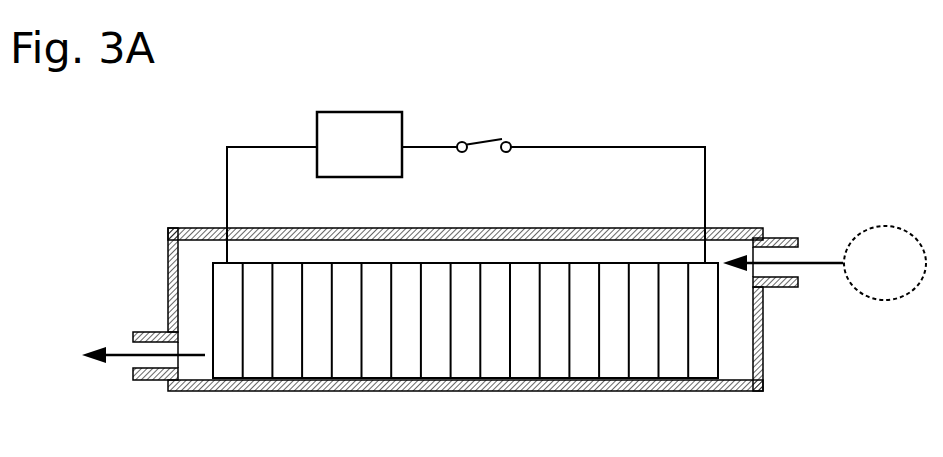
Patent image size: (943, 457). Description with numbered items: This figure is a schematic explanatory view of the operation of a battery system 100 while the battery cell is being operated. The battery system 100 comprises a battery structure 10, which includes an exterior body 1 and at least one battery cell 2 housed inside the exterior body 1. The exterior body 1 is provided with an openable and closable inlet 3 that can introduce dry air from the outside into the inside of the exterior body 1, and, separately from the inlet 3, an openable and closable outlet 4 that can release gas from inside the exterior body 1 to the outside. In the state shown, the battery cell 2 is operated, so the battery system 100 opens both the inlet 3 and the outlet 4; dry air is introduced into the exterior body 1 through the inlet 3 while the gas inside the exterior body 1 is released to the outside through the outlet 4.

The battery system 100 is at (481, 84).
The battery structure 10 is at (168, 187).
The exterior body 1 is at (675, 228).
The battery cell 2 is at (674, 367).
The inlet 3 is at (775, 238).
The outlet 4 is at (152, 381).